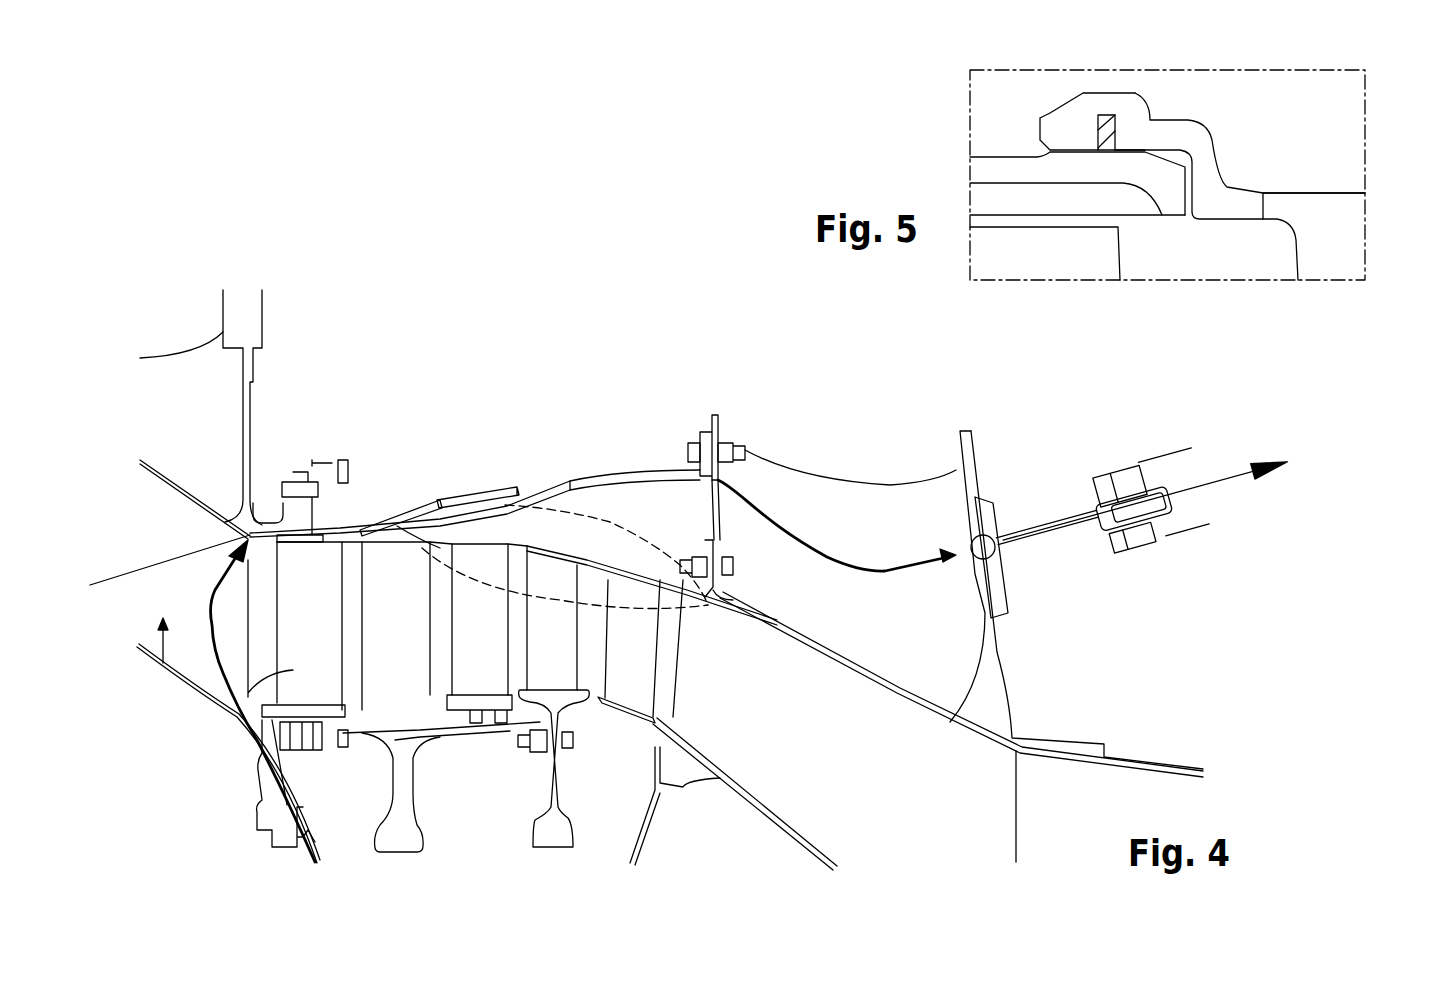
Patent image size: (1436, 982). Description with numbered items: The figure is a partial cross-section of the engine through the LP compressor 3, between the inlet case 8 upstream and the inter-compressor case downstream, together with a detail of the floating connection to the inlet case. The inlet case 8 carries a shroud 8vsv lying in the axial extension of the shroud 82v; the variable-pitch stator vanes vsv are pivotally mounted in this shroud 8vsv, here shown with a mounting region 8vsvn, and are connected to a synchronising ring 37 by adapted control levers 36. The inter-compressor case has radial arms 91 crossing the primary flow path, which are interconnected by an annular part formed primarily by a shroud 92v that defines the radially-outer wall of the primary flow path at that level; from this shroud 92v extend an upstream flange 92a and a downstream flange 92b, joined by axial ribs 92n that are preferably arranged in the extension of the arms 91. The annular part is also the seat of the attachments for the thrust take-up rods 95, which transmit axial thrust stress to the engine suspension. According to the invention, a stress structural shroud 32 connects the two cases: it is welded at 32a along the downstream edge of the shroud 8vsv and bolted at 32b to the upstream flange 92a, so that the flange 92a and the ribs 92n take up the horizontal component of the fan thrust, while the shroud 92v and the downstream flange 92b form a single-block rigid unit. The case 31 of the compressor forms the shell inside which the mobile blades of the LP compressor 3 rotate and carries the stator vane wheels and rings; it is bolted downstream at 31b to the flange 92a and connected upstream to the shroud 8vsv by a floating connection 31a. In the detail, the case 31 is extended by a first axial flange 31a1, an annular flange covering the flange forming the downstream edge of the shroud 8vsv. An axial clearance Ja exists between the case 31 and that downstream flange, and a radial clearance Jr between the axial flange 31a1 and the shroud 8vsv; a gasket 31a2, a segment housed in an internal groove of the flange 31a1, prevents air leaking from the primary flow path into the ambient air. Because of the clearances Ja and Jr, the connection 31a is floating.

In FIG. 4, the LP compressor 3 is at (582, 864).
In FIG. 4, the inlet case 8 is at (163, 665).
In FIG. 4, the shroud 8vsv is at (262, 520).
In FIG. 5, the shroud 8vsv is at (1000, 168).
In FIG. 4, the variable stator vane pivot 8vsvn is at (270, 505).
In FIG. 4, the shroud 82v is at (183, 495).
In FIG. 4, the case 31 is at (549, 606).
In FIG. 5, the case 31 is at (1328, 200).
In FIG. 4, the floating connection 31a is at (442, 528).
In FIG. 5, the floating connection 31a is at (1033, 90).
In FIG. 5, the first axial flange 31a1 is at (1077, 120).
In FIG. 5, the gasket 31a2 is at (1103, 116).
In FIG. 4, the bolted connection 31b is at (683, 547).
In FIG. 4, the stress structural shroud 32 is at (553, 476).
In FIG. 4, the weld 32a is at (430, 500).
In FIG. 4, the bolted connection 32b is at (700, 432).
In FIG. 4, the control levers 36 is at (312, 463).
In FIG. 4, the synchronising ring 37 is at (344, 460).
In FIG. 4, the radial arms 91 is at (827, 788).
In FIG. 4, the upstream flange 92a is at (718, 416).
In FIG. 4, the downstream flange 92b is at (970, 428).
In FIG. 4, the axial ribs 92n is at (875, 474).
In FIG. 4, the shroud 92v is at (913, 712).
In FIG. 4, the thrust take-up rods 95 is at (1148, 466).
In FIG. 4, the variable-pitch stator vanes vsv is at (248, 697).
In FIG. 5, the radial clearance Jr is at (1140, 135).
In FIG. 5, the axial clearance Ja is at (1204, 188).